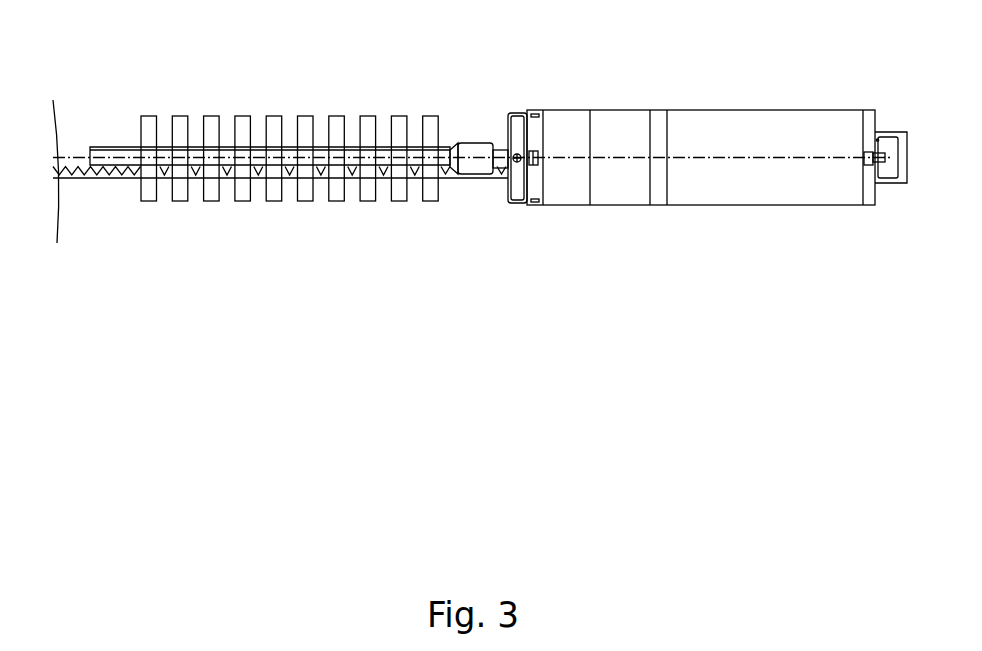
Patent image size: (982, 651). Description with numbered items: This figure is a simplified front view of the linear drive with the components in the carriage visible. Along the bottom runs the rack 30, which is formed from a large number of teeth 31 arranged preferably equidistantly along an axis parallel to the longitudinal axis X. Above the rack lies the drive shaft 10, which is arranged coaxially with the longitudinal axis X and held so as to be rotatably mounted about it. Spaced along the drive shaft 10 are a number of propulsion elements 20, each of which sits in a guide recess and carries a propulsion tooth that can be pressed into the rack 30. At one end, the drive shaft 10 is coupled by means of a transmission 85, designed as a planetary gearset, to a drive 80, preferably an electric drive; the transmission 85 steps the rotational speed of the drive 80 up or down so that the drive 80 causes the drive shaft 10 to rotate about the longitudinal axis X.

The longitudinal axis X is at (73, 162).
The rack 30 is at (83, 173).
The teeth 31 is at (75, 290).
The propulsion element 20 is at (275, 175).
The drive shaft 10 is at (468, 165).
The transmission 85 is at (558, 185).
The drive 80 is at (715, 183).